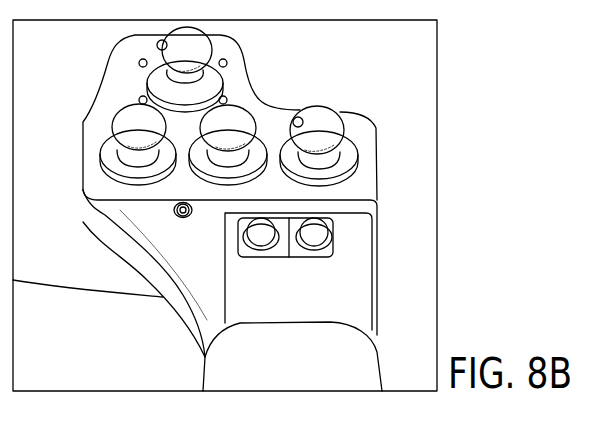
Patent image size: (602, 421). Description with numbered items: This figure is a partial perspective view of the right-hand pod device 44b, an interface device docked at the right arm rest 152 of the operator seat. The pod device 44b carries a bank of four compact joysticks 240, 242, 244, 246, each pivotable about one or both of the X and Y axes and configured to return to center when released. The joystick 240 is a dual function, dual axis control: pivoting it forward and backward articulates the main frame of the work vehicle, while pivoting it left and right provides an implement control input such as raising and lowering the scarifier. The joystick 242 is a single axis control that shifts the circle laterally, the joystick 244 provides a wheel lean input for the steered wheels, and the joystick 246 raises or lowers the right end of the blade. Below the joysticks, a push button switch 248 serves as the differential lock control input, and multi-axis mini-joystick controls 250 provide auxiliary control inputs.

The right-hand pod device 44b is at (378, 127).
The joystick 240 is at (177, 50).
The joystick 242 is at (127, 127).
The joystick 244 is at (235, 120).
The joystick 246 is at (330, 125).
The push button switch 248 is at (187, 214).
The multi-axis mini-joystick controls 250 is at (312, 233).
The arm rest 152 is at (357, 372).